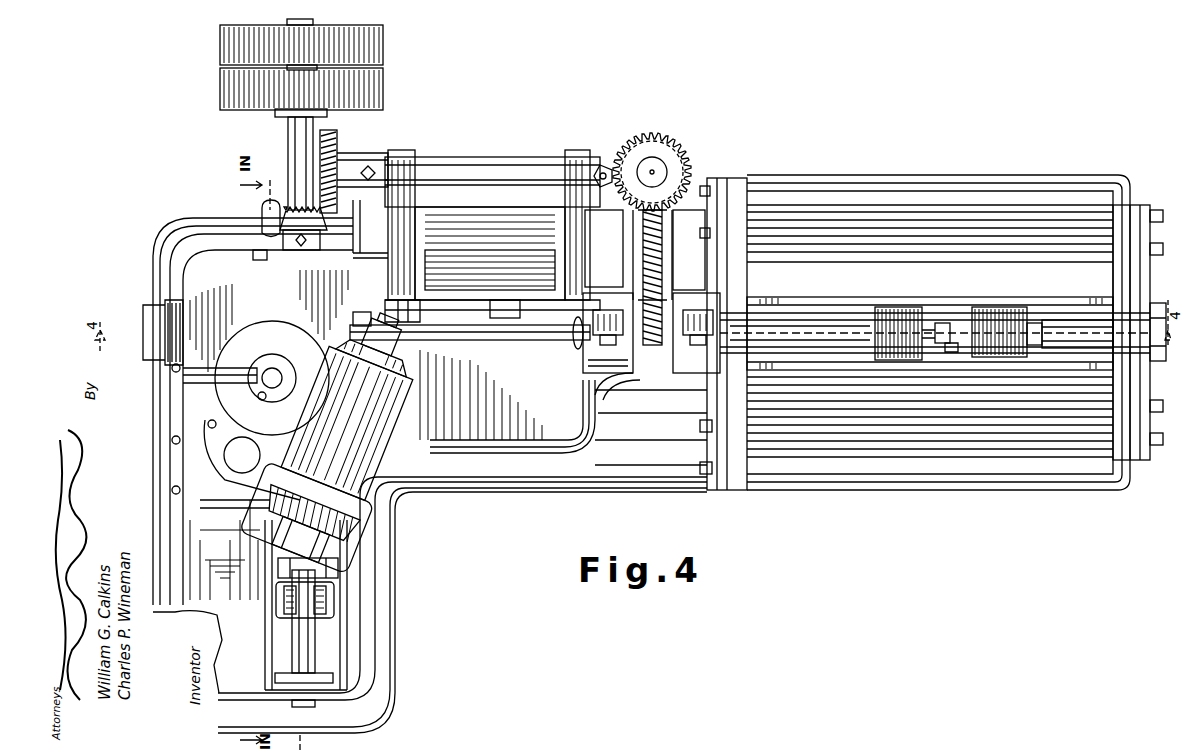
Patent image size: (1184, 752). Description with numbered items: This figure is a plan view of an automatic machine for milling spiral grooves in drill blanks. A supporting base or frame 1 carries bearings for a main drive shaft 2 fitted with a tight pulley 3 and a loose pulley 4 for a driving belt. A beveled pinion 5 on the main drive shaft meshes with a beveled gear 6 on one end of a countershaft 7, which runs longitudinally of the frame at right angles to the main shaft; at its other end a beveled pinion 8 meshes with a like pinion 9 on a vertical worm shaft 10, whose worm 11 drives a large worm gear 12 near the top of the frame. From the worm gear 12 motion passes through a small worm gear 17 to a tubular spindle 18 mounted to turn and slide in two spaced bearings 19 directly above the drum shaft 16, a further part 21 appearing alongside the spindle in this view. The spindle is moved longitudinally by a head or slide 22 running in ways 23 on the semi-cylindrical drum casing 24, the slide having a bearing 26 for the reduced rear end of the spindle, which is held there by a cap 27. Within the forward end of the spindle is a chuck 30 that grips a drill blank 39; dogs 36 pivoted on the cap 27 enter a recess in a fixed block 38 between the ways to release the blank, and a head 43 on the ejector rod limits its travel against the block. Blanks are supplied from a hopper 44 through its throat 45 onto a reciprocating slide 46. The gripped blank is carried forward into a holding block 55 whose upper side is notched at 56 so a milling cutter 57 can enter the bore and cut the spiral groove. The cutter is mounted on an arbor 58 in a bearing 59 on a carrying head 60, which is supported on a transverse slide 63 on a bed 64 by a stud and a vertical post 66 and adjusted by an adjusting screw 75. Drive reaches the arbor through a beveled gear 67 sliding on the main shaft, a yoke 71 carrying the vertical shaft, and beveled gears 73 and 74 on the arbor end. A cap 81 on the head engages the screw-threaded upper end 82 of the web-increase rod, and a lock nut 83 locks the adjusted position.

The supporting base or frame 1 is at (845, 190).
The main drive shaft 2 is at (316, 127).
The tight pulley 3 is at (383, 95).
The loose pulley 4 is at (383, 52).
The beveled pinion 5 is at (270, 213).
The beveled gear 6 is at (338, 148).
The countershaft 7 is at (470, 172).
The beveled pinion 8 is at (612, 160).
The beveled pinion 9 is at (650, 138).
The vertical worm shaft 10 is at (658, 172).
The worm 11 is at (683, 152).
The large worm gear 12 is at (640, 235).
The drum shaft 16 is at (1125, 348).
The small worm gear 17 is at (620, 378).
The spindle 18 is at (760, 325).
The bearings 19 is at (690, 295).
The sleeve 21 is at (790, 333).
The head or slide 22 is at (1010, 296).
The ways 23 is at (815, 305).
The drum casing 24 is at (935, 232).
The bearing 26 is at (903, 318).
The cap 27 is at (940, 323).
The chuck 30 is at (578, 348).
The dogs or fingers 36 is at (950, 352).
The fixed block 38 is at (1035, 323).
The drill blank 39 is at (467, 332).
The head 43 is at (1060, 325).
The hopper 44 is at (505, 252).
The throat 45 is at (392, 305).
The slide 46 is at (520, 305).
The holding block 55 is at (360, 312).
The notch 56 is at (428, 385).
The milling cutter 57 is at (352, 330).
The arbor 58 is at (350, 488).
The bearing 59 is at (385, 425).
The carrying head 60 is at (208, 424).
The slide 63 is at (205, 460).
The bed 64 is at (205, 505).
The vertical post 66 is at (242, 455).
The beveled gear 67 is at (338, 568).
The yoke 71 is at (334, 598).
The beveled gear 73 is at (345, 528).
The beveled gear 74 is at (250, 522).
The adjusting screw 75 is at (258, 258).
The cap 81 is at (238, 340).
The screw-threaded upper end 82 is at (272, 370).
The lock nut 83 is at (258, 398).